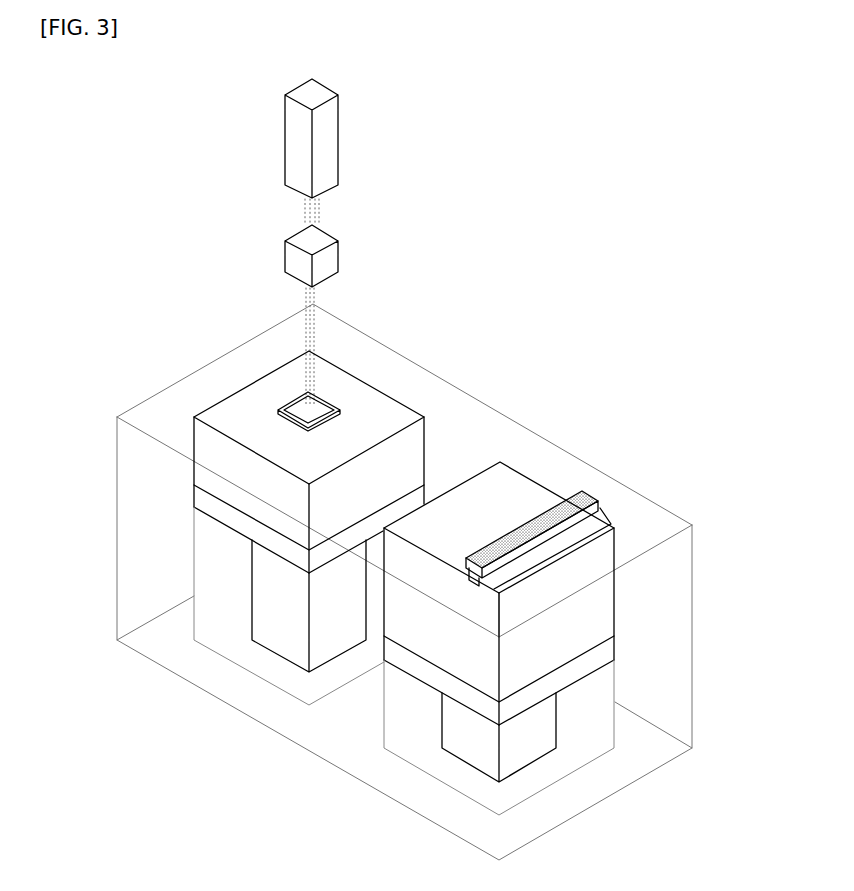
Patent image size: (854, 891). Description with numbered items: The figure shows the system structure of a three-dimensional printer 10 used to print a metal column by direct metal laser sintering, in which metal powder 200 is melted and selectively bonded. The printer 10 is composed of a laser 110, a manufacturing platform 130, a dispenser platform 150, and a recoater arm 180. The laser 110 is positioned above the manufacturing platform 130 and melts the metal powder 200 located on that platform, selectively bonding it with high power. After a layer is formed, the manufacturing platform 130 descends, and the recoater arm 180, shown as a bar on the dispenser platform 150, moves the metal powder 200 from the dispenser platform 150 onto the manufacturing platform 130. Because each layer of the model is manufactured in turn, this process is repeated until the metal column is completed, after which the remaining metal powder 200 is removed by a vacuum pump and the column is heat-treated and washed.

The 3D printer 10 is at (623, 231).
The laser 110 is at (328, 147).
The manufacturing platform 130 is at (195, 495).
The dispenser platform 150 is at (615, 648).
The recoater arm 180 is at (598, 505).
The metal powder 200 is at (390, 417).